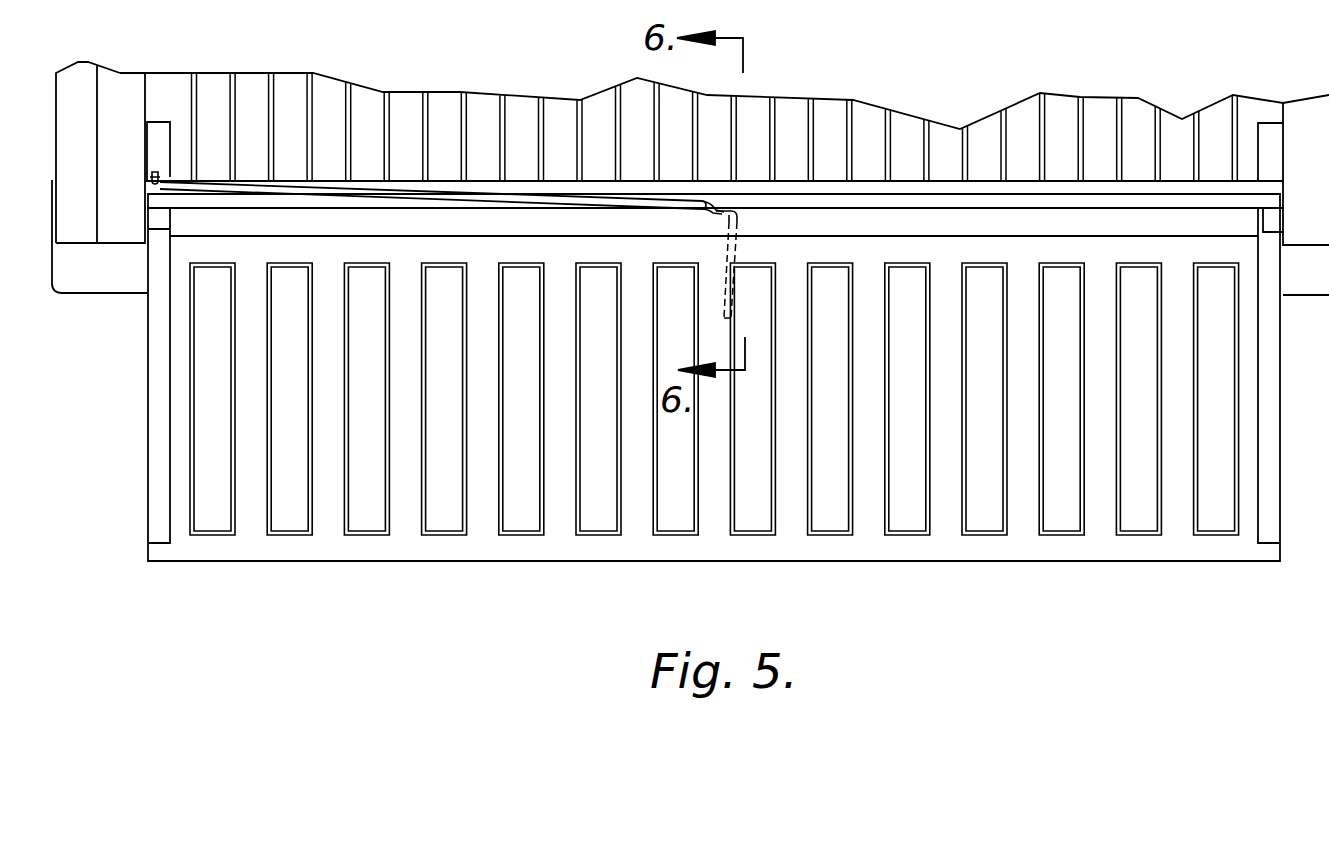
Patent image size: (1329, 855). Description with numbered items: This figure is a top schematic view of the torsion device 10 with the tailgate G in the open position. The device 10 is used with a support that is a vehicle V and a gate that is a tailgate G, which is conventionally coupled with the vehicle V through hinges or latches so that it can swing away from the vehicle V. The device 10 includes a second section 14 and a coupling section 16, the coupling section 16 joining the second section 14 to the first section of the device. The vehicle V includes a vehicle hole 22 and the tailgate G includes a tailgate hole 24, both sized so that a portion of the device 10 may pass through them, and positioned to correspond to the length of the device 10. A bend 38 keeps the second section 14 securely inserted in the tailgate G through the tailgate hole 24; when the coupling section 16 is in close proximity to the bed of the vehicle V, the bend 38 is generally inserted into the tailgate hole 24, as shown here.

The torsion device 10 is at (478, 221).
The second section 14 is at (748, 258).
The coupling section 16 is at (440, 195).
The vehicle hole 22 is at (150, 177).
The tailgate hole 24 is at (737, 223).
The bend 38 is at (723, 212).
The vehicle V is at (108, 80).
The tailgate G is at (503, 547).